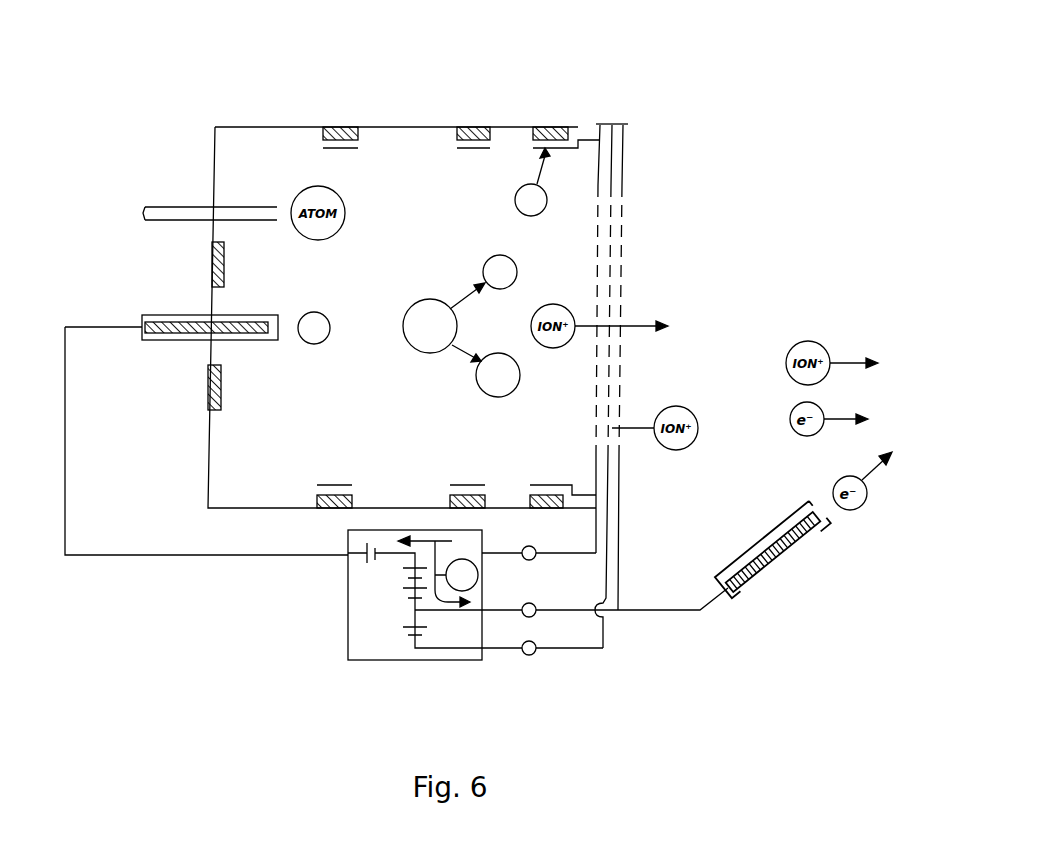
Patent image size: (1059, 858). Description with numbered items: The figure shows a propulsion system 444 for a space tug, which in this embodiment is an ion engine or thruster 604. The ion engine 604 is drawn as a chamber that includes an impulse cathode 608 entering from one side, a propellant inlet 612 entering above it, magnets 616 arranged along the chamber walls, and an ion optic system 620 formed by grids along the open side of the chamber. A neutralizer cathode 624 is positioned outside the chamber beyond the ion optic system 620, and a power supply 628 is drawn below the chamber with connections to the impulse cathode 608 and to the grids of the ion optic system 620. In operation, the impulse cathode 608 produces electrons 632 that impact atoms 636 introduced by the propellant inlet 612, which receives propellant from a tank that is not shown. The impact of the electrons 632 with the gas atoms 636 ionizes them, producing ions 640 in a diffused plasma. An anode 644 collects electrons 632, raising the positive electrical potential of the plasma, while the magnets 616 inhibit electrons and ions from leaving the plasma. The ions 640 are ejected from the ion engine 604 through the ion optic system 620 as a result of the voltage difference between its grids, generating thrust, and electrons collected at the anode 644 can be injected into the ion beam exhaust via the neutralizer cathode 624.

The propulsion system 444 is at (481, 50).
The ion engine 604 is at (271, 126).
The impulse cathode 608 is at (163, 316).
The propellant inlet 612 is at (165, 207).
The magnets 616 is at (360, 128).
The ion optic system 620 is at (611, 123).
The neutralizer cathode 624 is at (772, 575).
The power supply 628 is at (347, 635).
The electrons 632 is at (514, 203).
The atoms 636 is at (417, 299).
The ions 640 is at (498, 397).
The anode 644 is at (540, 127).